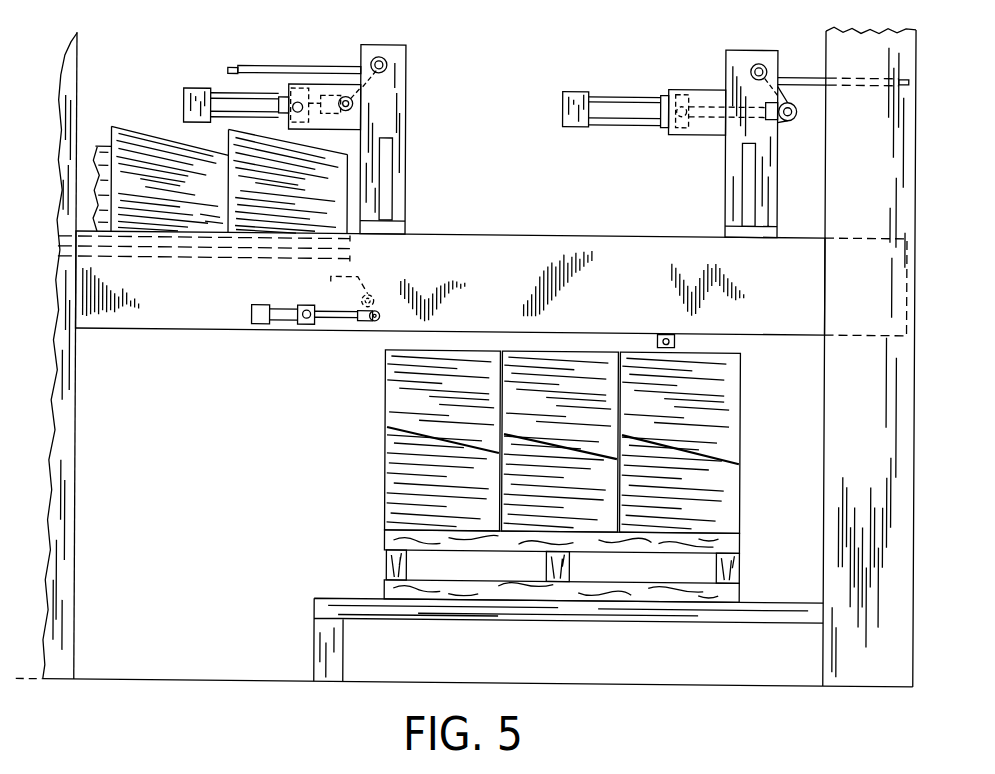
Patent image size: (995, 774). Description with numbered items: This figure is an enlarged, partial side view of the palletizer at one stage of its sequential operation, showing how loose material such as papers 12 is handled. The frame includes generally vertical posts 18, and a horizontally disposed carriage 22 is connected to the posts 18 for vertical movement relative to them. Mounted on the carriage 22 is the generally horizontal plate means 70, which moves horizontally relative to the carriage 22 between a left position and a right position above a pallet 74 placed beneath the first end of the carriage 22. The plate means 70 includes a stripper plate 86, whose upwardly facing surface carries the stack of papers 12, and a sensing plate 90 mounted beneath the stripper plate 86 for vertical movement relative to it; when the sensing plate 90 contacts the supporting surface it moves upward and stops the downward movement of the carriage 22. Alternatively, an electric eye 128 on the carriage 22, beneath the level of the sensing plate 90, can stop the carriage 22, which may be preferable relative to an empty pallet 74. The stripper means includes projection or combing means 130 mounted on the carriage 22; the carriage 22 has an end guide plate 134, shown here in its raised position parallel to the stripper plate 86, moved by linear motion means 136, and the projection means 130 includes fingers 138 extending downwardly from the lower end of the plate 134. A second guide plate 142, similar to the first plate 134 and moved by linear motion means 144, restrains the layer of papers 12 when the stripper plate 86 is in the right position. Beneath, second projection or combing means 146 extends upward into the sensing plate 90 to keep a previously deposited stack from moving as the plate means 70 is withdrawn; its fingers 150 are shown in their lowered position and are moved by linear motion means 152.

The papers 12 is at (335, 186).
The posts 18 is at (67, 492).
The carriage 22 is at (660, 243).
The plate means 70 is at (232, 261).
The pallet 74 is at (388, 535).
The stripper plate 86 is at (352, 238).
The sensing plate 90 is at (178, 254).
The electric eye 128 is at (682, 337).
The projection or combing means 130 is at (259, 118).
The end guide member or plate 134 is at (310, 64).
The linear motion means 136 is at (220, 105).
The fingers 138 is at (230, 66).
The second guide member or plate 142 is at (852, 79).
The linear motion means 144 is at (641, 92).
The second projection or combing means 146 is at (352, 290).
The fingers 150 is at (330, 281).
The linear motion means 152 is at (283, 310).